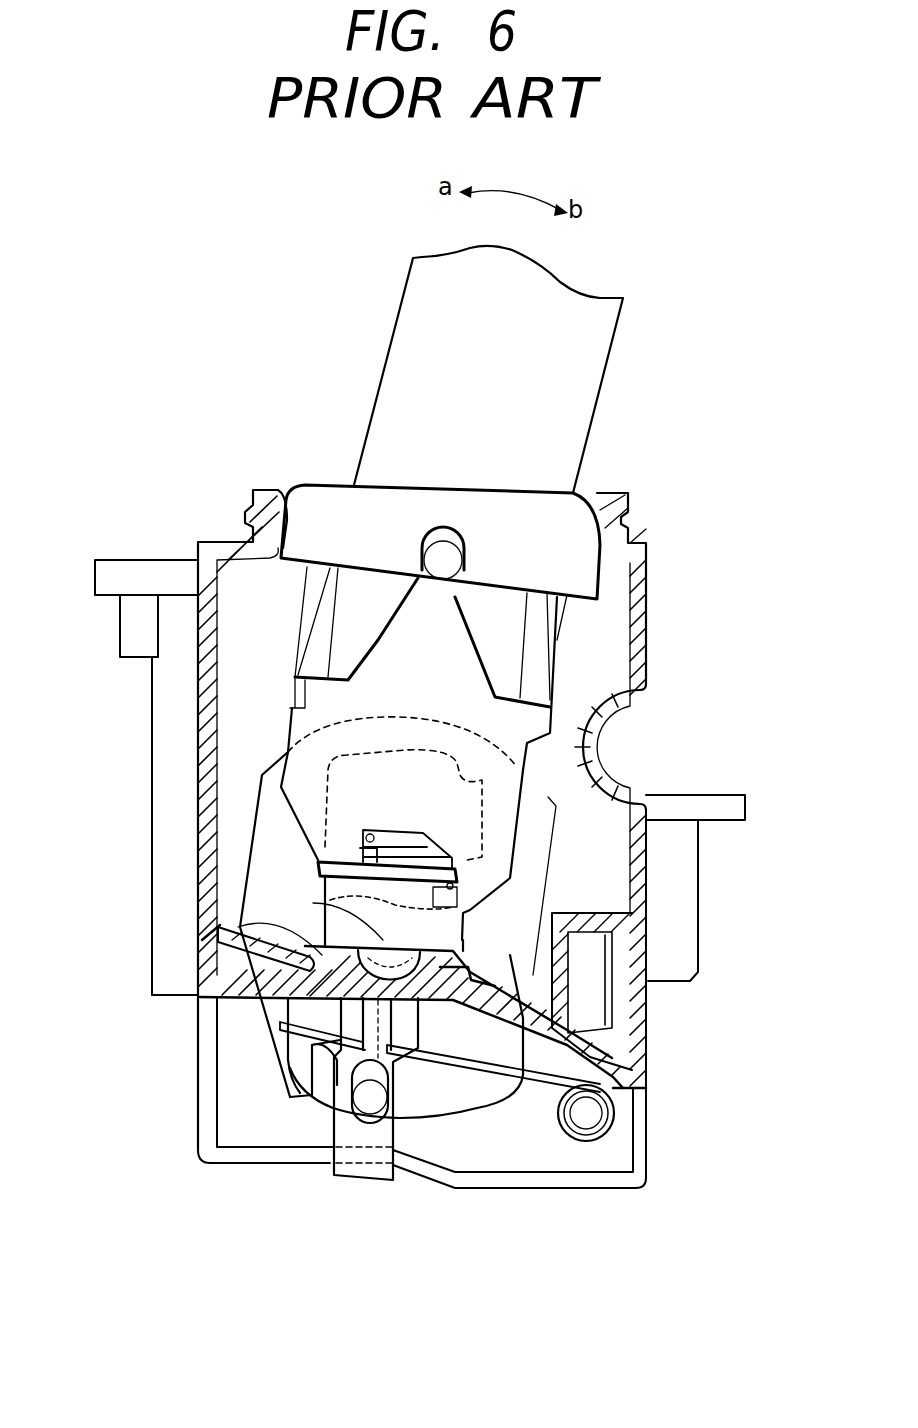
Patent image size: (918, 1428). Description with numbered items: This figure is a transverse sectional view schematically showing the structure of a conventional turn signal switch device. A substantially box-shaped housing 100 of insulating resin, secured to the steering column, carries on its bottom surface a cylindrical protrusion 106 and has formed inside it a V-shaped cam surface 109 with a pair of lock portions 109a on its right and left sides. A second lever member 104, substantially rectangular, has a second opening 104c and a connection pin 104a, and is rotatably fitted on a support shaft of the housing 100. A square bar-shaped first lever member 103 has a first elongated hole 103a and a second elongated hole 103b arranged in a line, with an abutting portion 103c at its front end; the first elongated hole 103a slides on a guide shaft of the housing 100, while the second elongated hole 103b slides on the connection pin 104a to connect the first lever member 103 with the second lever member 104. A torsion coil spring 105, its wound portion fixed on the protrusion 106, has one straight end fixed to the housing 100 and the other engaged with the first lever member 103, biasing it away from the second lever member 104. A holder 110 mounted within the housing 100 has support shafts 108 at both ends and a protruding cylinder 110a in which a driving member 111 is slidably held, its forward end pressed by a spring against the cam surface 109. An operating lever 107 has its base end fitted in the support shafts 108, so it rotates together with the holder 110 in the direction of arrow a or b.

The housing 100 is at (194, 736).
The first lever member 103 is at (323, 1127).
The first elongated hole 103a is at (278, 1025).
The second elongated hole 103b is at (373, 1122).
The abutting portion 103c is at (340, 1172).
The second lever member 104 is at (248, 815).
The connection pin 104a is at (327, 1100).
The second opening 104c is at (483, 790).
The torsion coil spring 105 is at (615, 1008).
The cylindrical protrusion 106 is at (593, 1112).
The operating lever 107 is at (383, 355).
The support shafts 108 is at (440, 556).
The V-shaped cam surface 109 is at (447, 1050).
The lock portions 109a is at (270, 920).
The holder 110 is at (470, 673).
The cylinder 110a is at (343, 885).
The driving member 111 is at (345, 907).